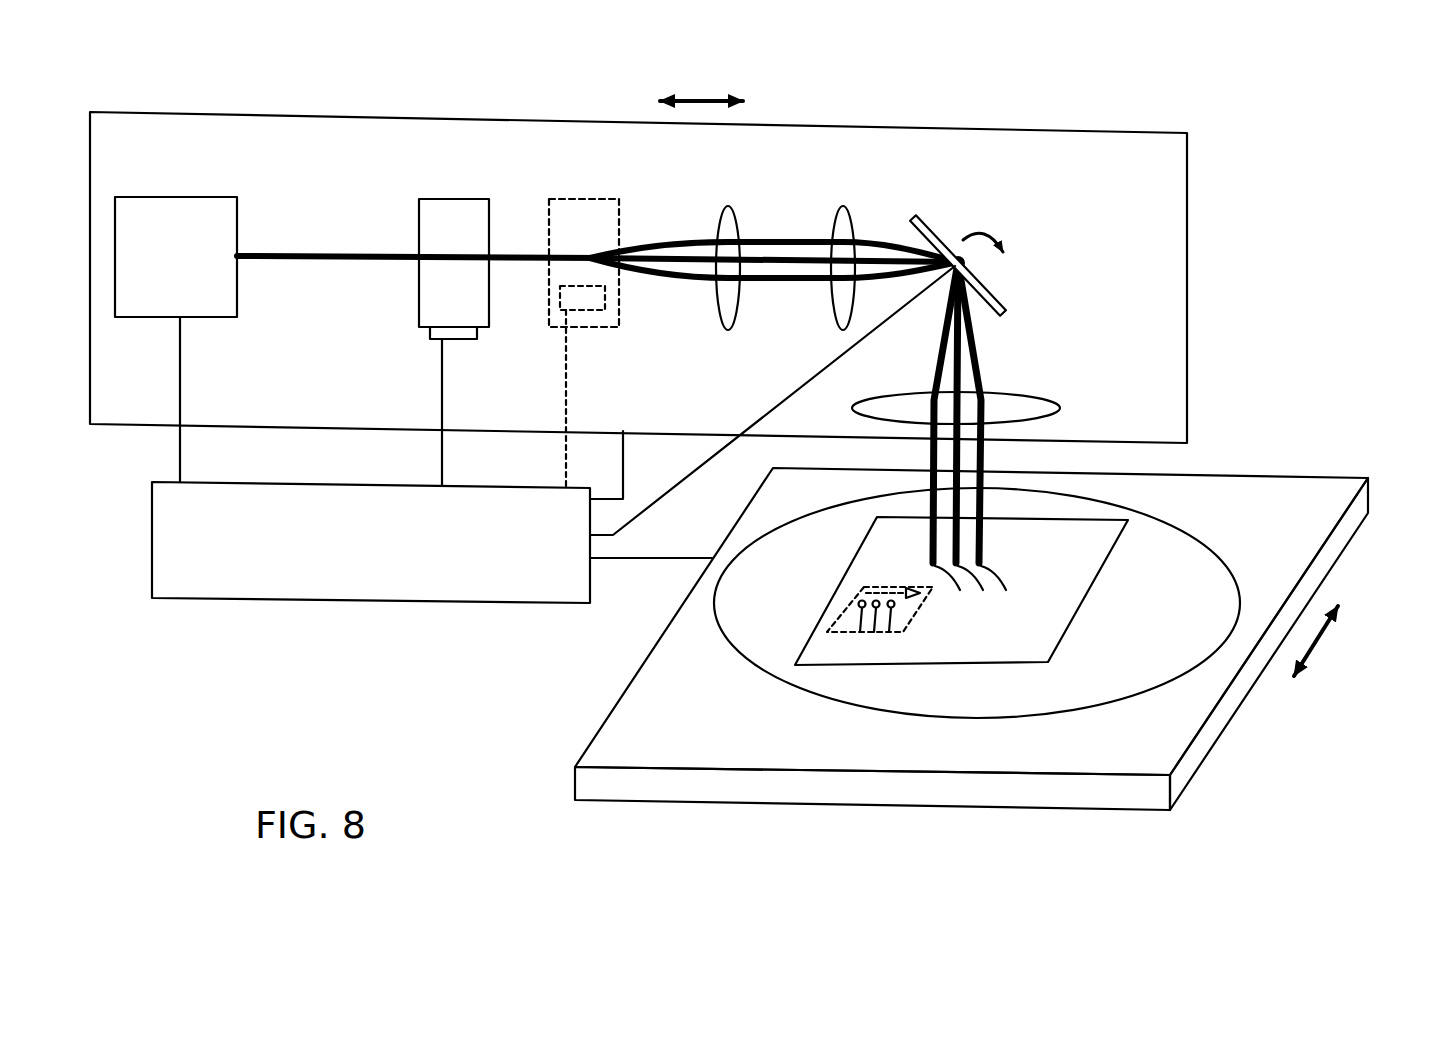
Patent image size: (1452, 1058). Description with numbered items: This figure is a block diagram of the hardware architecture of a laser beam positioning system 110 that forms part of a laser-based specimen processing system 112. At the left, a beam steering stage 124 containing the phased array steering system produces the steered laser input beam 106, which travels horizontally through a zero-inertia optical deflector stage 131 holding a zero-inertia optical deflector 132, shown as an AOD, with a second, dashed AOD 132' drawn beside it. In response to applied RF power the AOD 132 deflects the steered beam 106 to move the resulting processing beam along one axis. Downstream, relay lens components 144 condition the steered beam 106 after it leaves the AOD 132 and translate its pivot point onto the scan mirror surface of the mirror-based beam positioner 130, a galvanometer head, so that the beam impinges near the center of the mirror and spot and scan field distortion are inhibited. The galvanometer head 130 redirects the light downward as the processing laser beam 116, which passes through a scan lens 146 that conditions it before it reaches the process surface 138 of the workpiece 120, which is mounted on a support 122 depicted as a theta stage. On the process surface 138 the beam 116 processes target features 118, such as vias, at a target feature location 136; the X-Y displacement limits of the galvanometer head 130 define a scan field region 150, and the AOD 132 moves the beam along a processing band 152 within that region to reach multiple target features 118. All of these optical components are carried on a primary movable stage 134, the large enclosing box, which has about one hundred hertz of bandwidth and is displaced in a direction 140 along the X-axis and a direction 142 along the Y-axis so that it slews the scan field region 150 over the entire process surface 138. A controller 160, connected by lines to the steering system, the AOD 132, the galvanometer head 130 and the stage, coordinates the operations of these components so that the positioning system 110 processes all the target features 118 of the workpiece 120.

The laser beam positioning system 110 is at (1230, 120).
The movable stage 134 is at (933, 126).
The direction along X-axis 140 is at (683, 98).
The beam steering stage 124 is at (241, 190).
The phased array steered laser input beam 106 is at (278, 259).
The zero-inertia optical deflector stage 131 is at (523, 188).
The zero-inertia optical deflector 132 is at (461, 322).
The second acousto-optic deflector (AOD) 132' is at (593, 322).
The relay lens components 144 is at (830, 306).
The processing laser beam 116 is at (953, 338).
The mirror-based beam positioner 130 is at (1006, 305).
The scan lens 146 is at (1033, 398).
The controller 160 is at (393, 601).
The laser-based specimen processing system 112 is at (572, 636).
The support 122 is at (860, 803).
The direction along Y-axis 142 is at (1302, 667).
The workpiece 120 is at (1078, 615).
The process surface 138 is at (977, 655).
The target features 118 is at (880, 627).
The scan field region 150 is at (860, 592).
The processing band 152 is at (897, 588).
The target feature location 136 is at (984, 590).